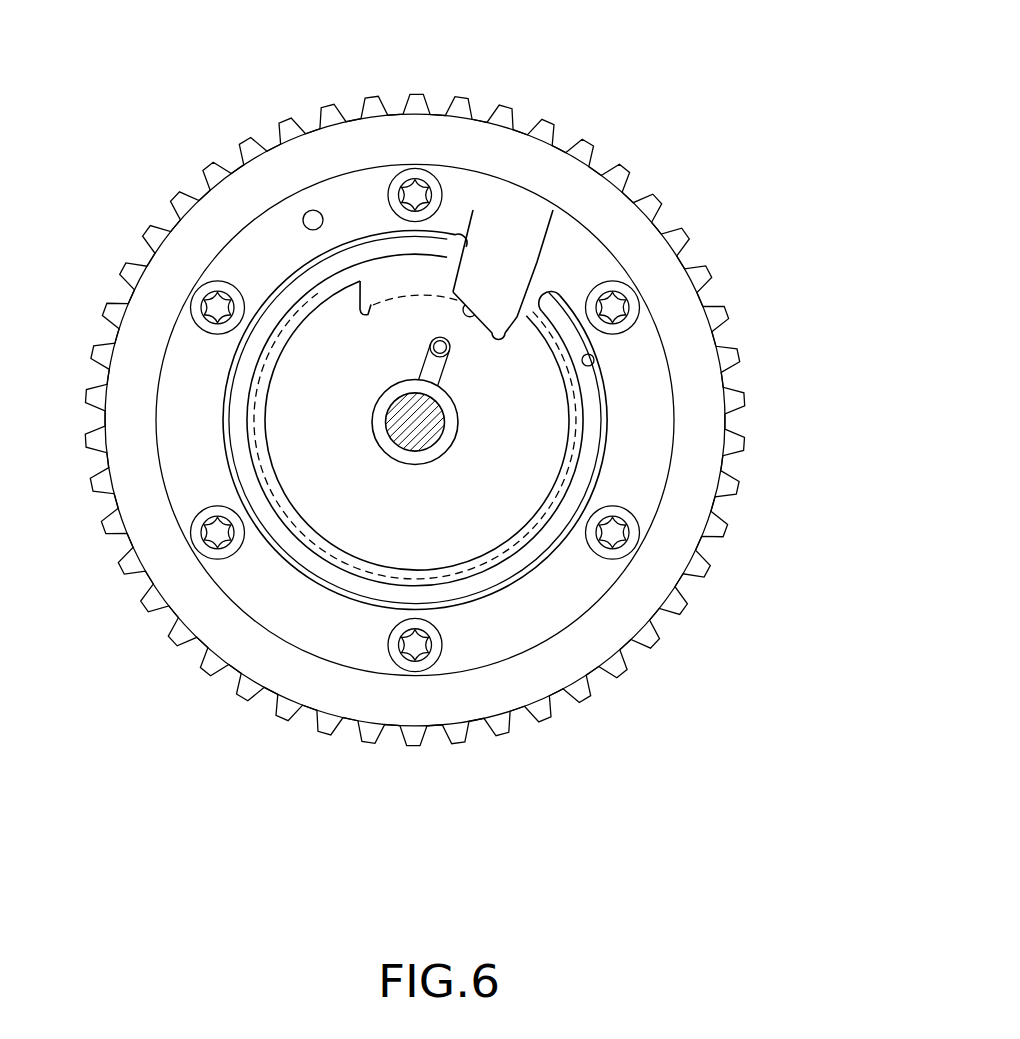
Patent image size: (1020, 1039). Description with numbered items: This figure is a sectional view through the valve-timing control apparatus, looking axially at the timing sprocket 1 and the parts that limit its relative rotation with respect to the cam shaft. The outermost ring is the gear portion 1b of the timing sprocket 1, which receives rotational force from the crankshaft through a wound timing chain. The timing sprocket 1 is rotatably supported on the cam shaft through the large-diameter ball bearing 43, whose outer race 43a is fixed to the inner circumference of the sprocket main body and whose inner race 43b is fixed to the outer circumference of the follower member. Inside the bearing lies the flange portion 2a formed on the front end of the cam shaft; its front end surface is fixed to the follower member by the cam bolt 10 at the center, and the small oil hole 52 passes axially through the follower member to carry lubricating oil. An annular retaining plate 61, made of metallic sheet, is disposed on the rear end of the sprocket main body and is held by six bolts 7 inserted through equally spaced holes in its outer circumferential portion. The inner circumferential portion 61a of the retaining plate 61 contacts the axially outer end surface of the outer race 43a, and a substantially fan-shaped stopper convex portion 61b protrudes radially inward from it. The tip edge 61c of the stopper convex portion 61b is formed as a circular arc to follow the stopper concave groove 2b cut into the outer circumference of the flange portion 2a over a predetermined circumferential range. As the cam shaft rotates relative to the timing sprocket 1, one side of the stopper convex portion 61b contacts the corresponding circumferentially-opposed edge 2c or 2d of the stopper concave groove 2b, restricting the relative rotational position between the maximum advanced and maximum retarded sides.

The timing sprocket 1 is at (606, 687).
The gear portion 1b is at (549, 727).
The flange portion 2a is at (545, 462).
The stopper concave groove 2b is at (400, 299).
The circumferentially-opposed edge of the stopper concave groove 2c is at (363, 286).
The circumferentially-opposed edge of the stopper concave groove 2d is at (523, 290).
The bolt 7 is at (614, 304).
The cam bolt 10 is at (397, 446).
The large-diameter ball bearing 43 is at (480, 585).
The outer race 43a is at (513, 584).
The inner race 43b is at (441, 578).
The oil hole 52 is at (453, 352).
The retaining plate 61 is at (590, 250).
The inner circumferential portion 61a is at (593, 362).
The stopper convex portion 61b is at (470, 266).
The tip edge 61c is at (511, 303).